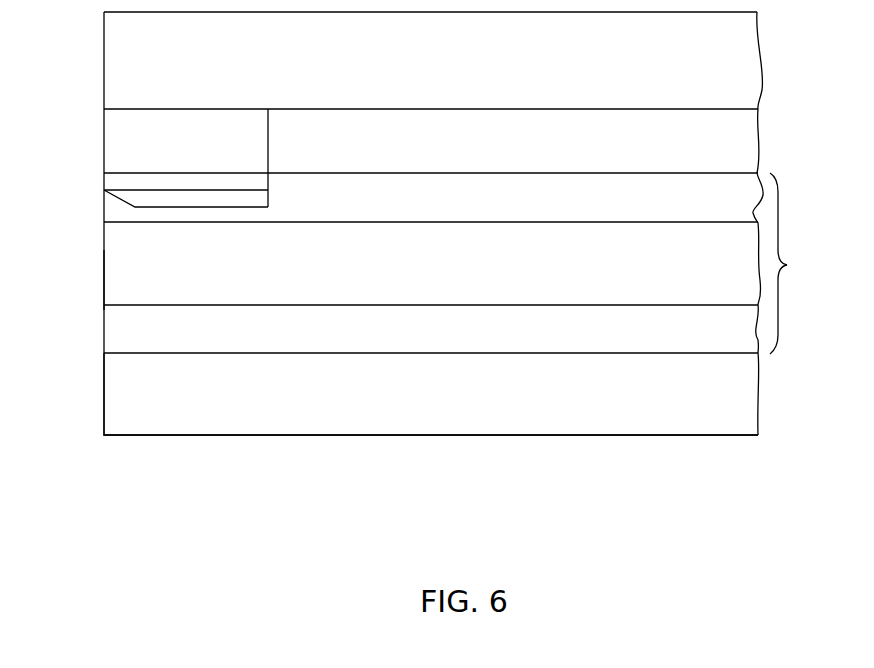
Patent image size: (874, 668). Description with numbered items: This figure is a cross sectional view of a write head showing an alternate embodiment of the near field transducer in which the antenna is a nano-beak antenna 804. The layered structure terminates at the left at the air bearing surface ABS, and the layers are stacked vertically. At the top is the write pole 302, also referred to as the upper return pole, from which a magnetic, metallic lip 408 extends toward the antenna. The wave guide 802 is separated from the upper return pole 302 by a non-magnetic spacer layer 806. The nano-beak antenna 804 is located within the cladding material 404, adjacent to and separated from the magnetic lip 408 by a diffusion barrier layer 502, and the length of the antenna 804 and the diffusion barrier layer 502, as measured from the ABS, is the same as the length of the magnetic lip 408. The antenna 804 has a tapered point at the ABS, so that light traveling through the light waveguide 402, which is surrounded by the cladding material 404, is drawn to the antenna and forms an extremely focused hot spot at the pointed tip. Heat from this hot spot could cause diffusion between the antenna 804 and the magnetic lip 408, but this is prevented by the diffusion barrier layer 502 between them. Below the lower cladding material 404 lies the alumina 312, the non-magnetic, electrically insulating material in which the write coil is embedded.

The write pole 302 is at (458, 62).
The alumina 312 is at (431, 394).
The light waveguide 402 is at (431, 281).
The cladding material 404 is at (431, 271).
The magnetic lip 408 is at (178, 144).
The diffusion barrier layer 502 is at (260, 184).
The wave guide 802 is at (777, 187).
The nano-beak antenna 804 is at (255, 196).
The non-magnetic spacer layer 806 is at (570, 145).
The air bearing surface ABS is at (104, 280).